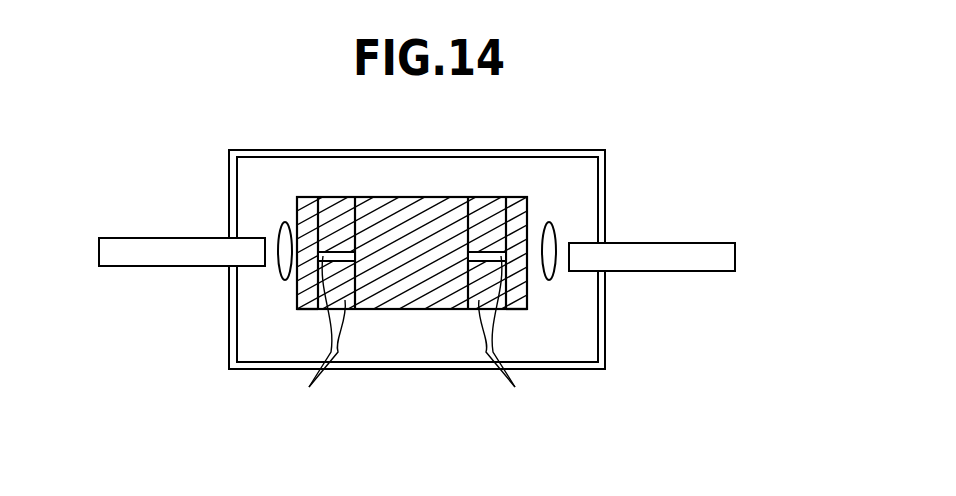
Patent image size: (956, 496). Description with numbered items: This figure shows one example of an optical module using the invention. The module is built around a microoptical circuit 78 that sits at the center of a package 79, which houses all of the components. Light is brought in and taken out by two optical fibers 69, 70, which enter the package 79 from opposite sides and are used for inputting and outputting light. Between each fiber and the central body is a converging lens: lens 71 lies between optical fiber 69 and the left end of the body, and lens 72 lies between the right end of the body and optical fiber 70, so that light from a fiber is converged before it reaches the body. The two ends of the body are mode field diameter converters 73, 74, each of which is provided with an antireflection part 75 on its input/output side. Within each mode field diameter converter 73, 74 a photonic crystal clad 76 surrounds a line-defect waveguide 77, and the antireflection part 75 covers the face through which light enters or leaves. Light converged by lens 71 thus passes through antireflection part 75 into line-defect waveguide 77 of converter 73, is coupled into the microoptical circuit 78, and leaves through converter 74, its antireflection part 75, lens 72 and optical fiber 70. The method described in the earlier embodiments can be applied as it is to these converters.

The optical fiber 69 is at (172, 247).
The optical fiber 70 is at (645, 257).
The lens 71 is at (279, 236).
The lens 72 is at (555, 237).
The mode field diameter converter 73 is at (298, 193).
The mode field diameter converter 74 is at (468, 193).
The antireflection part 75 is at (305, 313).
The photonic crystal clad 76 is at (413, 335).
The line-defect waveguide 77 is at (343, 256).
The microoptical circuit 78 is at (401, 222).
The package 79 is at (572, 370).